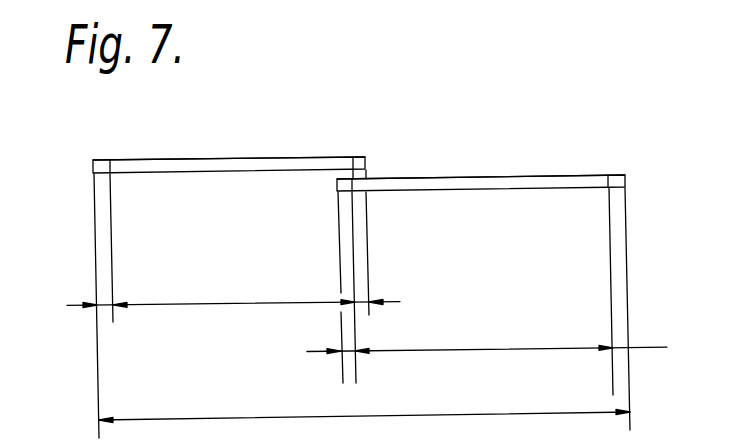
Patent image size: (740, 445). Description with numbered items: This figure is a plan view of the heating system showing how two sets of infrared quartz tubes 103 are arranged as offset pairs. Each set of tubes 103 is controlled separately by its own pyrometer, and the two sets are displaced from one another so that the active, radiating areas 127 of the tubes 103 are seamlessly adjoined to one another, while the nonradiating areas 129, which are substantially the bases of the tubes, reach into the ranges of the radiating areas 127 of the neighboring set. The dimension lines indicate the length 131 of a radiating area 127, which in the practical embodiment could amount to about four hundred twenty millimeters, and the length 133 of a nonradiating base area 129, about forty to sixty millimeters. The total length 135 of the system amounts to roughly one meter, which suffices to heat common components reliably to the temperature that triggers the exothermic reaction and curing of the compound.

The quartz tube 103 is at (239, 152).
The radiating area 127 is at (168, 158).
The nonradiating area 129 is at (96, 158).
The length 131 is at (176, 303).
The length 133 is at (104, 308).
The total length 135 is at (458, 414).